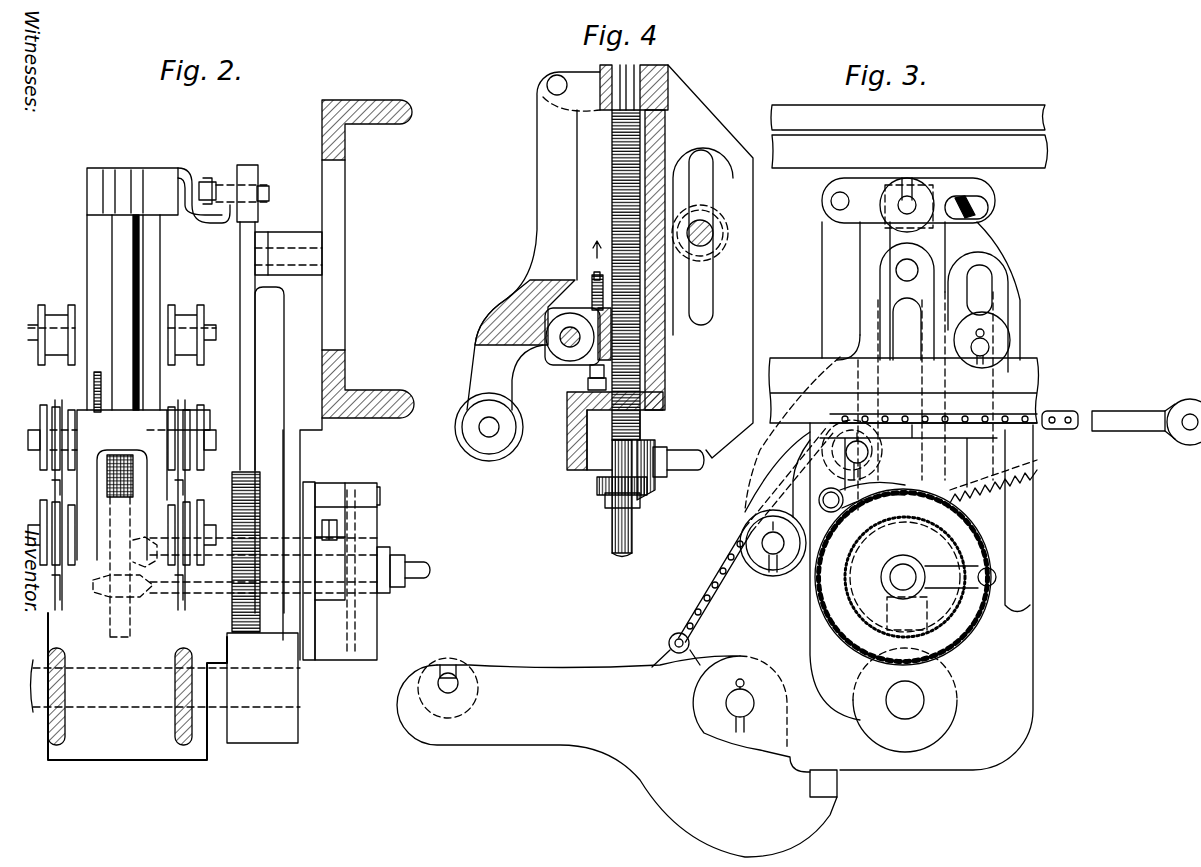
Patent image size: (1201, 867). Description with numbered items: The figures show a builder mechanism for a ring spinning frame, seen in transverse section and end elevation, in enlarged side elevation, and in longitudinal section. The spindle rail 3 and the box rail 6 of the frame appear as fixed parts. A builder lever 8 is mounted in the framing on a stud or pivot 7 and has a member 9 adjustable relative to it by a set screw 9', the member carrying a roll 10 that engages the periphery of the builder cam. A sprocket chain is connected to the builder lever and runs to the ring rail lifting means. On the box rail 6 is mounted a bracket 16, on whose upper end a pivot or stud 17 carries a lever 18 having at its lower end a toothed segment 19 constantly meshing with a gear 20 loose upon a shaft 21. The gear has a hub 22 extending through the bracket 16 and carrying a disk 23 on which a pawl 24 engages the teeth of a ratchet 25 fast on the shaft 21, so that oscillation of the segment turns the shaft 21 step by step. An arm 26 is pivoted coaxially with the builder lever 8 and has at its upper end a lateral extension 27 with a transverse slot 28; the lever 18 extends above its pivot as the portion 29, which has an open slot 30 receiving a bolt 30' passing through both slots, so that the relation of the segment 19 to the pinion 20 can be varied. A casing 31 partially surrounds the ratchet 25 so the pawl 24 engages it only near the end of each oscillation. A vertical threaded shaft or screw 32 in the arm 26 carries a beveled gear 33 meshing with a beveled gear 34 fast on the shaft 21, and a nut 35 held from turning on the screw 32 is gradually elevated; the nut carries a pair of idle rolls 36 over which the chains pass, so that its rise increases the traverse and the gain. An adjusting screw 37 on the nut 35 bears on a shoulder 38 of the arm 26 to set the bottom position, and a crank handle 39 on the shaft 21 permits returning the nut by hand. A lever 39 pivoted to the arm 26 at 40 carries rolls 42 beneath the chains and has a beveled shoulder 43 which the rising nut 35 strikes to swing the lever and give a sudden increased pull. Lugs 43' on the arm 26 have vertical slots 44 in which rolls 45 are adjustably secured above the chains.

In FIG. 2, the spindle rail 3 is at (380, 124).
In FIG. 3, the spindle rail 3 is at (1048, 155).
In FIG. 2, the box rail 6 is at (380, 410).
In FIG. 3, the box rail 6 is at (1027, 400).
In FIG. 2, the stud or pivot 7 is at (262, 700).
In FIG. 3, the stud or pivot 7 is at (912, 710).
In FIG. 2, the builder lever 8 is at (137, 748).
In FIG. 3, the builder lever 8 is at (872, 760).
In FIG. 3, the adjustable member 9 is at (617, 756).
In FIG. 3, the set screw 9' is at (800, 788).
In FIG. 3, the roll 10 is at (448, 663).
In FIG. 2, the bracket 16 is at (310, 334).
In FIG. 3, the bracket 16 is at (868, 328).
In FIG. 2, the pivot or stud 17 is at (308, 262).
In FIG. 3, the pivot or stud 17 is at (903, 280).
In FIG. 2, the lever 18 is at (250, 355).
In FIG. 2, the toothed segment 19 is at (255, 478).
In FIG. 3, the toothed segment 19 is at (1027, 482).
In FIG. 2, the gear 20 is at (245, 515).
In FIG. 3, the gear 20 is at (957, 643).
In FIG. 2, the shaft 21 is at (327, 567).
In FIG. 4, the shaft 21 is at (680, 467).
In FIG. 2, the hub 22 is at (262, 590).
In FIG. 2, the disk 23 is at (308, 652).
In FIG. 2, the pawl 24 is at (365, 488).
In FIG. 3, the pawl 24 is at (870, 490).
In FIG. 3, the ratchet 25 is at (977, 560).
In FIG. 3, the arm 26 is at (1010, 714).
In FIG. 2, the lateral extension 27 is at (224, 176).
In FIG. 3, the lateral extension 27 is at (985, 202).
In FIG. 3, the transverse slot 28 is at (970, 210).
In FIG. 2, the upward extension of lever 29 is at (252, 172).
In FIG. 3, the upward extension of lever 29 is at (928, 185).
In FIG. 3, the open slot 30 is at (897, 177).
In FIG. 2, the bolt 30' is at (262, 182).
In FIG. 3, the bolt 30' is at (922, 155).
In FIG. 2, the casing 31 is at (363, 628).
In FIG. 3, the casing 31 is at (813, 607).
In FIG. 2, the threaded shaft or screw 32 is at (138, 242).
In FIG. 4, the threaded shaft or screw 32 is at (617, 170).
In FIG. 2, the beveled gear 33 is at (137, 593).
In FIG. 4, the beveled gear 33 is at (603, 490).
In FIG. 3, the beveled gear 33 is at (895, 603).
In FIG. 2, the beveled gear 34 is at (132, 574).
In FIG. 4, the beveled gear 34 is at (660, 447).
In FIG. 3, the beveled gear 34 is at (898, 554).
In FIG. 2, the nut 35 is at (150, 418).
In FIG. 4, the nut 35 is at (640, 333).
In FIG. 4, the idle rolls 36 is at (577, 367).
In FIG. 3, the idle rolls 36 is at (823, 437).
In FIG. 2, the adjusting screw 37 is at (92, 392).
In FIG. 4, the adjusting screw 37 is at (590, 372).
In FIG. 4, the shoulder 38 is at (568, 428).
In FIG. 2, the lever 39 is at (112, 242).
In FIG. 4, the lever 39 is at (548, 168).
In FIG. 2, the pivot 40 is at (140, 183).
In FIG. 4, the pivot 40 is at (546, 82).
In FIG. 3, the pivot 40 is at (830, 200).
In FIG. 4, the rolls 42 is at (488, 461).
In FIG. 3, the rolls 42 is at (760, 572).
In FIG. 4, the beveled shoulder 43 is at (538, 325).
In FIG. 4, the lug 43' is at (750, 243).
In FIG. 3, the lug 43' is at (1032, 306).
In FIG. 4, the vertical slot 44 is at (710, 162).
In FIG. 3, the vertical slot 44 is at (985, 295).
In FIG. 4, the rolls 45 is at (697, 197).
In FIG. 3, the rolls 45 is at (1002, 345).